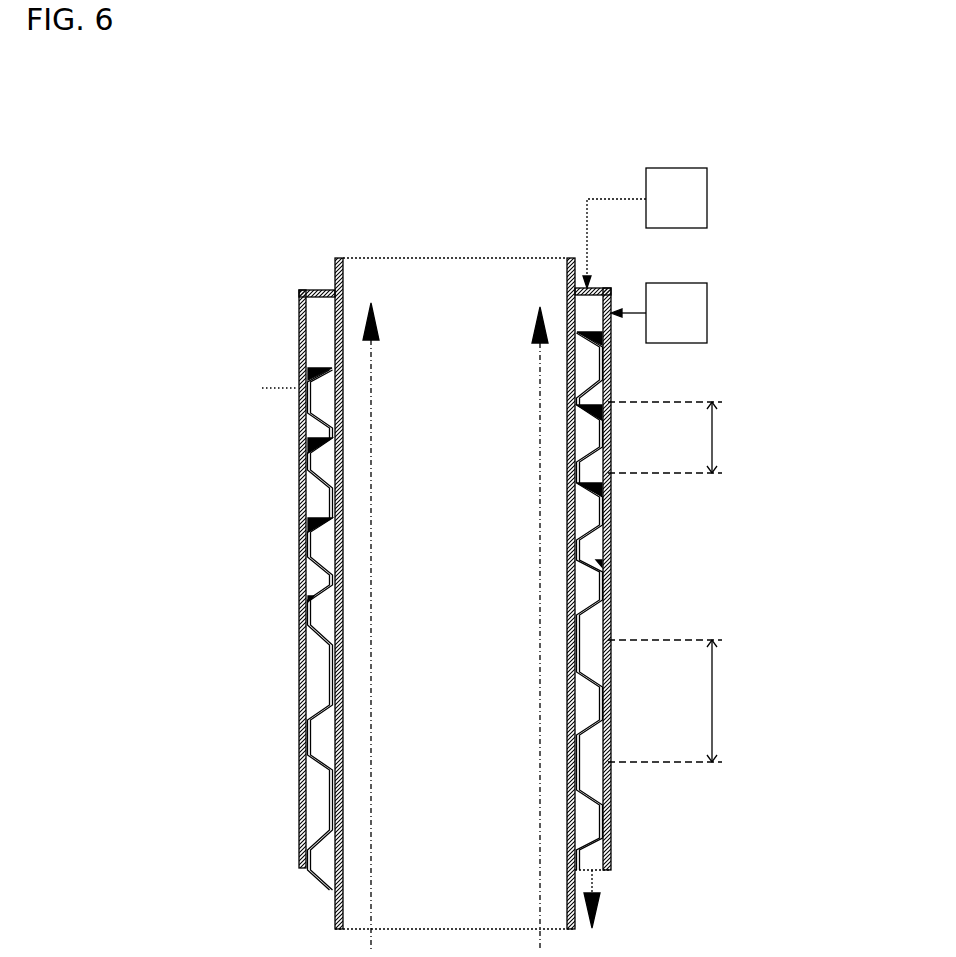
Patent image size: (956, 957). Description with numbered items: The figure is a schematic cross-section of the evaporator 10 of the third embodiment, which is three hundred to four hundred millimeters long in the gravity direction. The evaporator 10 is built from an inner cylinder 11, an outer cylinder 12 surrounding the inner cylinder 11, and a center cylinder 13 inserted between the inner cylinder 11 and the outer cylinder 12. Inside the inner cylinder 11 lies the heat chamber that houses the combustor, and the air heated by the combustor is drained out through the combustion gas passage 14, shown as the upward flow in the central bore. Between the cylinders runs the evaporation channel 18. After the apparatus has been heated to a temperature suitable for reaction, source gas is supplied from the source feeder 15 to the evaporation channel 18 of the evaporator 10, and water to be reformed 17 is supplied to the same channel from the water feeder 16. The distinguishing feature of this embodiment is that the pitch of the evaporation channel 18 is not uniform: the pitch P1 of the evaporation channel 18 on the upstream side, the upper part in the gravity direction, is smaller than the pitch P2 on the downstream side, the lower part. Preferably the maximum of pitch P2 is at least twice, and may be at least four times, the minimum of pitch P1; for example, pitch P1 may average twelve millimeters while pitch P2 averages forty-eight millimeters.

The evaporator 10 is at (97, 206).
The inner cylinder 11 is at (340, 271).
The outer cylinder 12 is at (315, 325).
The center cylinder 13 is at (320, 575).
The combustion gas passage 14 is at (375, 903).
The source feeder 15 is at (707, 205).
The water feeder 16 is at (707, 318).
The water to be reformed 17 is at (307, 453).
The evaporation channel 18 is at (320, 660).
The pitch of evaporation channel in the upstream side P1 is at (712, 437).
The pitch of evaporation channel in the downstream side P2 is at (712, 703).